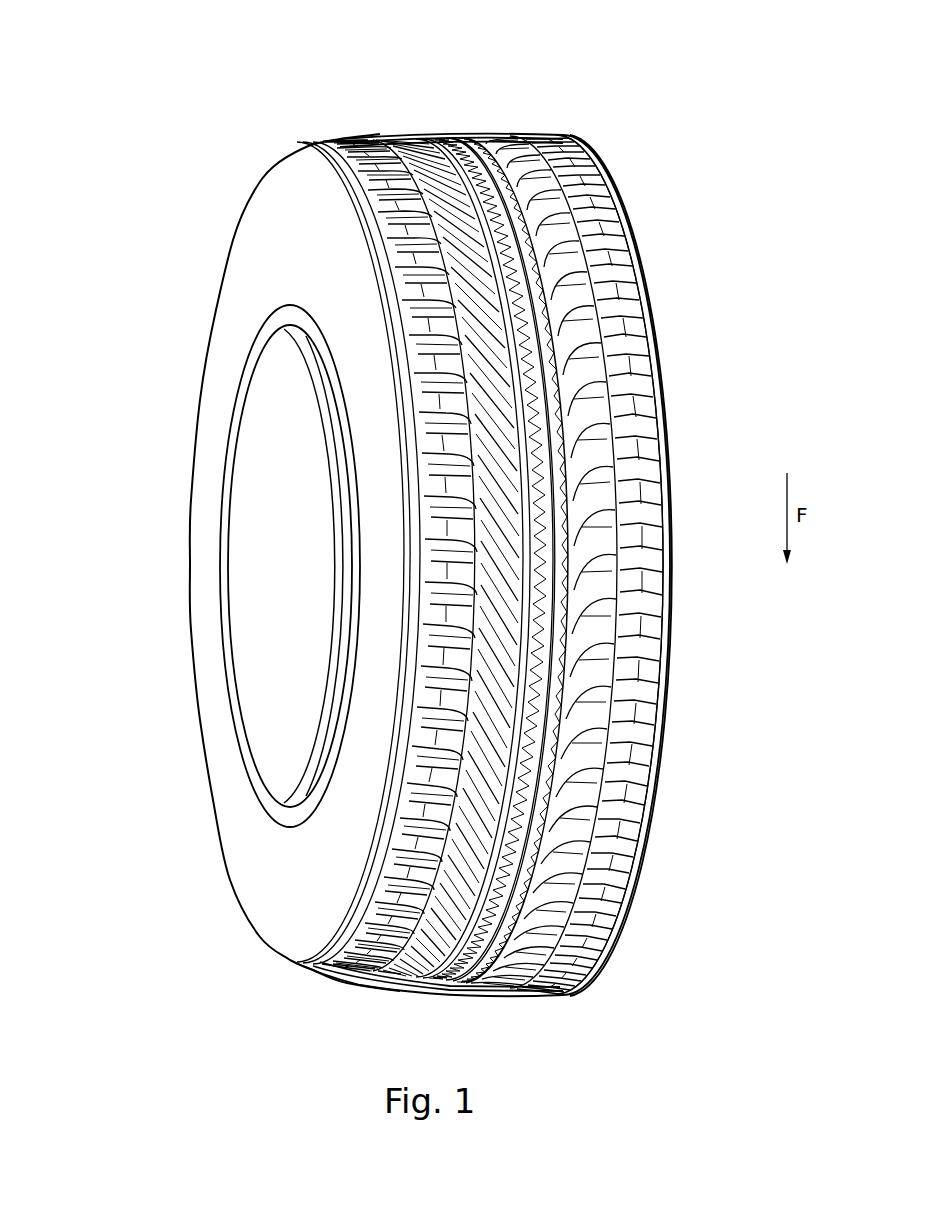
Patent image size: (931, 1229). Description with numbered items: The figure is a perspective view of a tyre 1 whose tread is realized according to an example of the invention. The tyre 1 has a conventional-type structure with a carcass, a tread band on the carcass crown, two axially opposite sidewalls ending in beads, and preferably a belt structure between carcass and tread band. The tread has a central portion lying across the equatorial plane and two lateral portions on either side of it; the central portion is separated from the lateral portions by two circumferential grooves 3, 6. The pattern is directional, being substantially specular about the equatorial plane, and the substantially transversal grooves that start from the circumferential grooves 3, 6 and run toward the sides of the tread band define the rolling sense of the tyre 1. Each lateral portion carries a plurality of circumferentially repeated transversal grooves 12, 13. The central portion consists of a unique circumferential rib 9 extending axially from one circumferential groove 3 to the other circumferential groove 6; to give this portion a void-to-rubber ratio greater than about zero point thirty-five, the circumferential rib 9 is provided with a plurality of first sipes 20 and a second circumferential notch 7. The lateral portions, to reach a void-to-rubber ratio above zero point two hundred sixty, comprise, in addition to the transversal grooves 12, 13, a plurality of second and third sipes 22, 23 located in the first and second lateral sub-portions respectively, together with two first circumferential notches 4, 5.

The tyre 1 is at (594, 118).
The circumferential groove 3 is at (430, 139).
The first circumferential notch 4 is at (400, 557).
The first circumferential notch 5 is at (655, 745).
The circumferential groove 6 is at (473, 137).
The second circumferential notch 7 is at (657, 797).
The circumferential rib 9 is at (445, 138).
The transversal groove 12 is at (400, 483).
The transversal groove 13 is at (640, 226).
The first sipe 20 is at (632, 598).
The second sipe 22 is at (395, 364).
The third sipe 23 is at (395, 402).